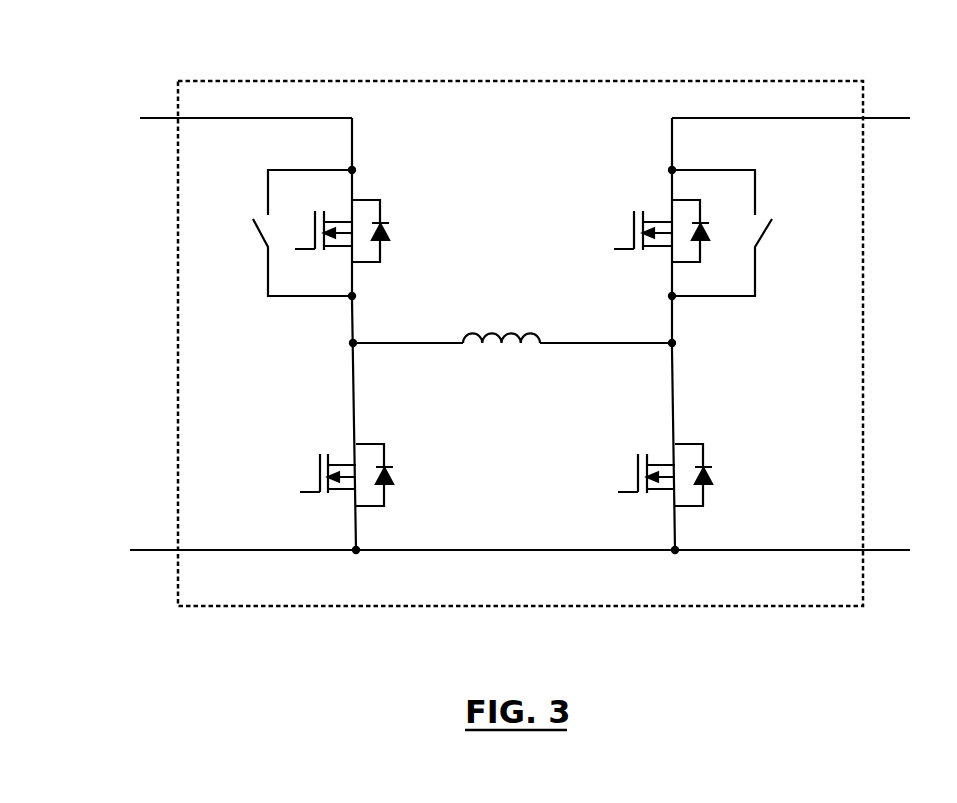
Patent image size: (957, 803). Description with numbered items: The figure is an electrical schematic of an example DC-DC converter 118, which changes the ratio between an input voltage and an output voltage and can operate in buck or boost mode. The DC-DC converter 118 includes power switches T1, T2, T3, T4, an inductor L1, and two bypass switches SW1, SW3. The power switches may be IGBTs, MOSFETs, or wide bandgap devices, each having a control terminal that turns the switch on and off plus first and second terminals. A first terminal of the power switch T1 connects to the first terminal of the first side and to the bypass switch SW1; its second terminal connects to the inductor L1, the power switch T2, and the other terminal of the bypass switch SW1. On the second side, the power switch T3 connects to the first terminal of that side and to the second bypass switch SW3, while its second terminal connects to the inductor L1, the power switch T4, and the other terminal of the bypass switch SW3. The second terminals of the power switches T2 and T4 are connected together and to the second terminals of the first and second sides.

The DC-DC converter 118 is at (368, 81).
The inductor L1 is at (501, 326).
The bypass switch SW1 is at (281, 233).
The second bypass switch SW3 is at (739, 233).
The power switch T1 is at (342, 238).
The power switch T2 is at (346, 483).
The power switch T3 is at (661, 238).
The power switch T4 is at (665, 483).